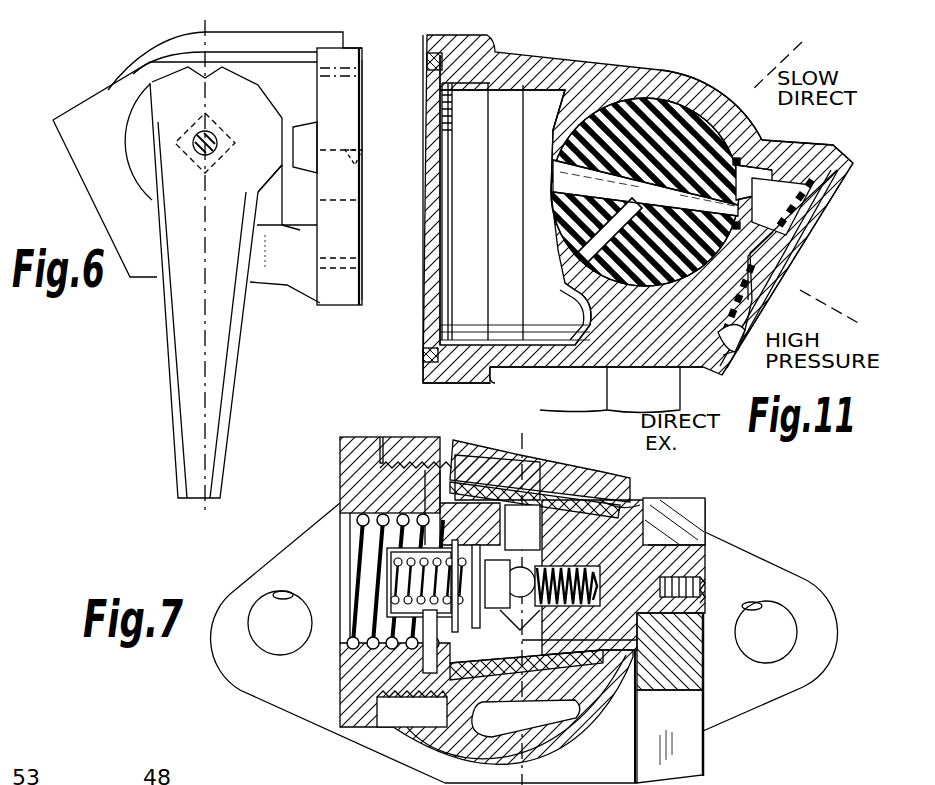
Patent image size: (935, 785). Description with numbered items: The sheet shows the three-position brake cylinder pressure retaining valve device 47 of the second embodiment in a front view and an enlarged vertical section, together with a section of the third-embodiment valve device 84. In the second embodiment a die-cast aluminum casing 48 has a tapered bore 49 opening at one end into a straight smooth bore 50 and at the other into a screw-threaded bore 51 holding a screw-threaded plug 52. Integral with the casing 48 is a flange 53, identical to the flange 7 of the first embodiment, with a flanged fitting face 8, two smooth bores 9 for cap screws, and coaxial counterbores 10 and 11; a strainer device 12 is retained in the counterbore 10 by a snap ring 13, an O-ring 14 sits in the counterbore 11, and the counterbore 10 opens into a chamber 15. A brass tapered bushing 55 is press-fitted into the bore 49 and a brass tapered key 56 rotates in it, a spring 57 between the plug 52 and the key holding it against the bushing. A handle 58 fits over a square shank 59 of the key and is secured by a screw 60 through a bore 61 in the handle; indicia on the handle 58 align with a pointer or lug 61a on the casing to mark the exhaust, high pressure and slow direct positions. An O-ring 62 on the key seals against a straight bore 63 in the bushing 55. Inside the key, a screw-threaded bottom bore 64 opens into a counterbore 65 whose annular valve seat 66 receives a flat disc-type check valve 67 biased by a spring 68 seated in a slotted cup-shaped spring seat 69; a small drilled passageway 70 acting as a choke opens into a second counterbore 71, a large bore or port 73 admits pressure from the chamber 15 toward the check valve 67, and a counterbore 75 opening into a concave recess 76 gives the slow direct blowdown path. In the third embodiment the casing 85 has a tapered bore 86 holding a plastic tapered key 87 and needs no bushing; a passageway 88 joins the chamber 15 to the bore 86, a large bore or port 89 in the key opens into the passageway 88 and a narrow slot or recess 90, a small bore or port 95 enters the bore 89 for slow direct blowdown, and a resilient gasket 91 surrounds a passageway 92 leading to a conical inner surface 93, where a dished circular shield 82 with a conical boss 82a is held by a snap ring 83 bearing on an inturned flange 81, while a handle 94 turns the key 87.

In FIG. 6, the flange 7 is at (205, 20).
In FIG. 6, the flanged fitting face 8 is at (366, 104).
In FIG. 11, the flanged fitting face 8 is at (423, 376).
In FIG. 7, the flanged fitting face 8 is at (522, 433).
In FIG. 6, the smooth bores 9 is at (360, 165).
In FIG. 7, the smooth bores 9 is at (273, 594).
In FIG. 11, the counterbore 10 is at (466, 343).
In FIG. 11, the counterbore 11 is at (437, 383).
In FIG. 11, the strainer device 12 is at (458, 193).
In FIG. 11, the snap ring 13 is at (448, 132).
In FIG. 11, the O-ring 14 is at (430, 68).
In FIG. 11, the chamber 15 is at (505, 95).
In FIG. 7, the chamber 15 is at (498, 738).
In FIG. 6, the three-position brake cylinder pressure retaining valve device 47 is at (112, 84).
In FIG. 6, the casing 48 is at (268, 282).
In FIG. 7, the casing 48 is at (388, 445).
In FIG. 7, the tapered bore 49 is at (468, 462).
In FIG. 7, the straight smooth bore 50 is at (620, 505).
In FIG. 7, the screw-threaded bore 51 is at (420, 462).
In FIG. 7, the screw-threaded plug 52 is at (350, 693).
In FIG. 6, the flange 53 is at (358, 48).
In FIG. 7, the flange 53 is at (300, 522).
In FIG. 7, the tapered bushing 55 is at (548, 485).
In FIG. 7, the tapered plug or key 56 is at (540, 508).
In FIG. 7, the spring 57 is at (380, 648).
In FIG. 6, the handle 58 is at (218, 362).
In FIG. 7, the handle 58 is at (690, 757).
In FIG. 7, the square shank 59 is at (664, 556).
In FIG. 6, the screw 60 is at (212, 158).
In FIG. 7, the screw 60 is at (700, 586).
In FIG. 7, the bore 61 is at (690, 618).
In FIG. 6, the pointer or lug 61a is at (305, 128).
In FIG. 7, the O-ring 62 is at (622, 512).
In FIG. 7, the straight bore 63 is at (630, 666).
In FIG. 7, the screw-threaded bottom bore 64 is at (628, 580).
In FIG. 7, the counterbore 65 is at (527, 624).
In FIG. 7, the annular valve seat 66 is at (500, 545).
In FIG. 7, the flat disc-type check valve 67 is at (460, 635).
In FIG. 7, the spring 68 is at (400, 574).
In FIG. 7, the slotted cup-shaped spring seat 69 is at (395, 600).
In FIG. 7, the drilled passageway 70 is at (510, 678).
In FIG. 7, the second counterbore 71 is at (440, 630).
In FIG. 7, the bore or port 73 is at (512, 575).
In FIG. 7, the counterbore 75 is at (536, 566).
In FIG. 7, the concave recess 76 is at (538, 540).
In FIG. 11, the inturned flange 81 is at (848, 168).
In FIG. 11, the dished circular shield 82 is at (796, 222).
In FIG. 11, the conical boss 82a is at (770, 260).
In FIG. 11, the snap ring 83 is at (762, 313).
In FIG. 11, the three-position brake cylinder pressure retaining valve device 84 is at (510, 384).
In FIG. 11, the casing 85 is at (572, 366).
In FIG. 11, the tapered bore 86 is at (628, 112).
In FIG. 11, the tapered key 87 is at (568, 100).
In FIG. 11, the passageway 88 is at (590, 316).
In FIG. 11, the bore or port 89 is at (560, 162).
In FIG. 11, the narrow slot or recess 90 is at (728, 118).
In FIG. 11, the resilient gasket 91 is at (755, 146).
In FIG. 11, the passageway 92 is at (766, 184).
In FIG. 11, the conical inner surface 93 is at (728, 341).
In FIG. 11, the handle 94 is at (684, 385).
In FIG. 11, the bore or port 95 is at (576, 250).